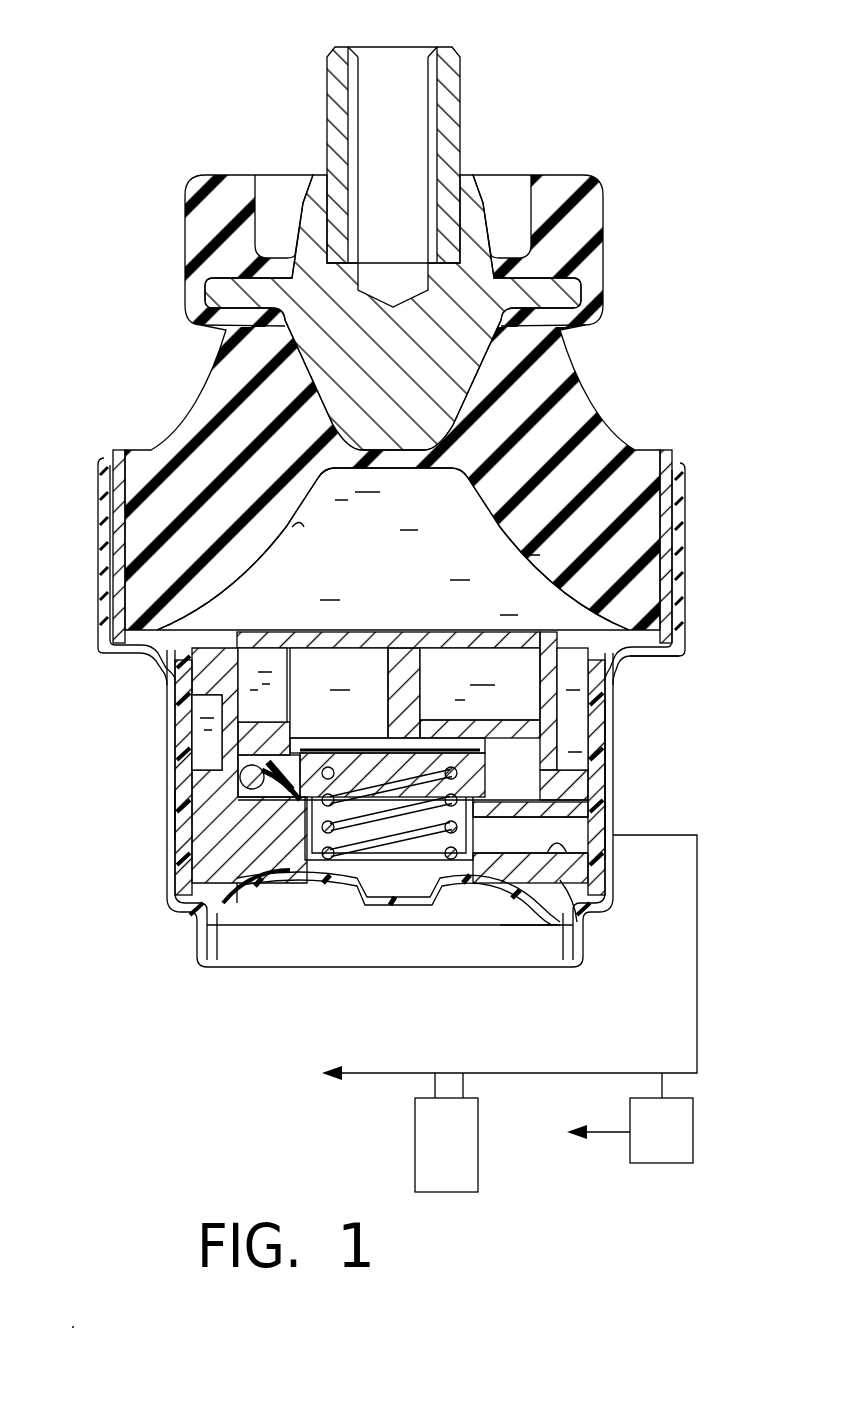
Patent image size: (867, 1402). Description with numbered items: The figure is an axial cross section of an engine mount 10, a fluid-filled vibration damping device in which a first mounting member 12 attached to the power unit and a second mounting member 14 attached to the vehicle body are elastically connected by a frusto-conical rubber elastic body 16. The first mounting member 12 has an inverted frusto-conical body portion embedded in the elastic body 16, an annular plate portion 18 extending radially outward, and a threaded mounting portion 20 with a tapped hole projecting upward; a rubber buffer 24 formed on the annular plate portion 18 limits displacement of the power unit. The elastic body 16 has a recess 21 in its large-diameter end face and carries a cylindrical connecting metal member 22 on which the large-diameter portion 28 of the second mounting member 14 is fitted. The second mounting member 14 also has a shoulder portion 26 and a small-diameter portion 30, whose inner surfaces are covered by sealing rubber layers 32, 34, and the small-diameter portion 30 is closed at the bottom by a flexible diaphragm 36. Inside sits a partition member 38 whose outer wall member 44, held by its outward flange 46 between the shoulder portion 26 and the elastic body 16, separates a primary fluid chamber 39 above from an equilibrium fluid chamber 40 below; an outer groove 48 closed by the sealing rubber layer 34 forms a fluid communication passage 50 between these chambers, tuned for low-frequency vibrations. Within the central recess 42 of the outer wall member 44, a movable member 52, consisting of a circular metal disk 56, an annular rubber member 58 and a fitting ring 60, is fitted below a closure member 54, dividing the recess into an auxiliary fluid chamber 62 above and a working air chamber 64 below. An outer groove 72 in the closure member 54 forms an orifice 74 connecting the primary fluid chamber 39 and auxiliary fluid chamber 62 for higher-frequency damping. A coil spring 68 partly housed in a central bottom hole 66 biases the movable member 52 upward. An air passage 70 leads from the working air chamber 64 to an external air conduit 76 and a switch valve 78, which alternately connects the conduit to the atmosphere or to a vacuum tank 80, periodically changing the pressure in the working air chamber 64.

The engine mount 10 is at (232, 88).
The first mounting member 12 is at (500, 366).
The second mounting member 14 is at (75, 568).
The elastic body 16 is at (230, 437).
The annular plate portion 18 is at (223, 293).
The threaded mounting portion 20 is at (447, 90).
The recess 21 is at (296, 525).
The cylindrical connecting metal member 22 is at (665, 512).
The rubber buffer 24 is at (218, 200).
The shoulder portion 26 is at (650, 652).
The large-diameter portion 28 is at (100, 545).
The small-diameter portion 30 is at (203, 838).
The sealing rubber layer 32 is at (683, 572).
The sealing rubber layer 34 is at (600, 778).
The flexible diaphragm 36 is at (290, 884).
The partition member 38 is at (533, 612).
The primary fluid chamber 39 is at (337, 487).
The equilibrium fluid chamber 40 is at (515, 918).
The central recess 42 is at (250, 682).
The outer wall member 44 is at (190, 850).
The outward flange 46 is at (150, 650).
The outer groove 48 is at (203, 753).
The fluid communication passage 50 is at (570, 755).
The movable member 52 is at (364, 725).
The closure member 54 is at (300, 640).
The circular metal disk 56 is at (427, 745).
The annular rubber member 58 is at (270, 778).
The fitting ring 60 is at (580, 802).
The auxiliary fluid chamber 62 is at (430, 737).
The working air chamber 64 is at (313, 843).
The central bottom hole 66 is at (423, 852).
The coil spring 68 is at (393, 840).
The air passage 70 is at (575, 883).
The outer groove 72 is at (283, 672).
The orifice 74 is at (253, 702).
The external air conduit 76 is at (703, 826).
The switch valve 78 is at (650, 1148).
The vacuum tank 80 is at (432, 1125).